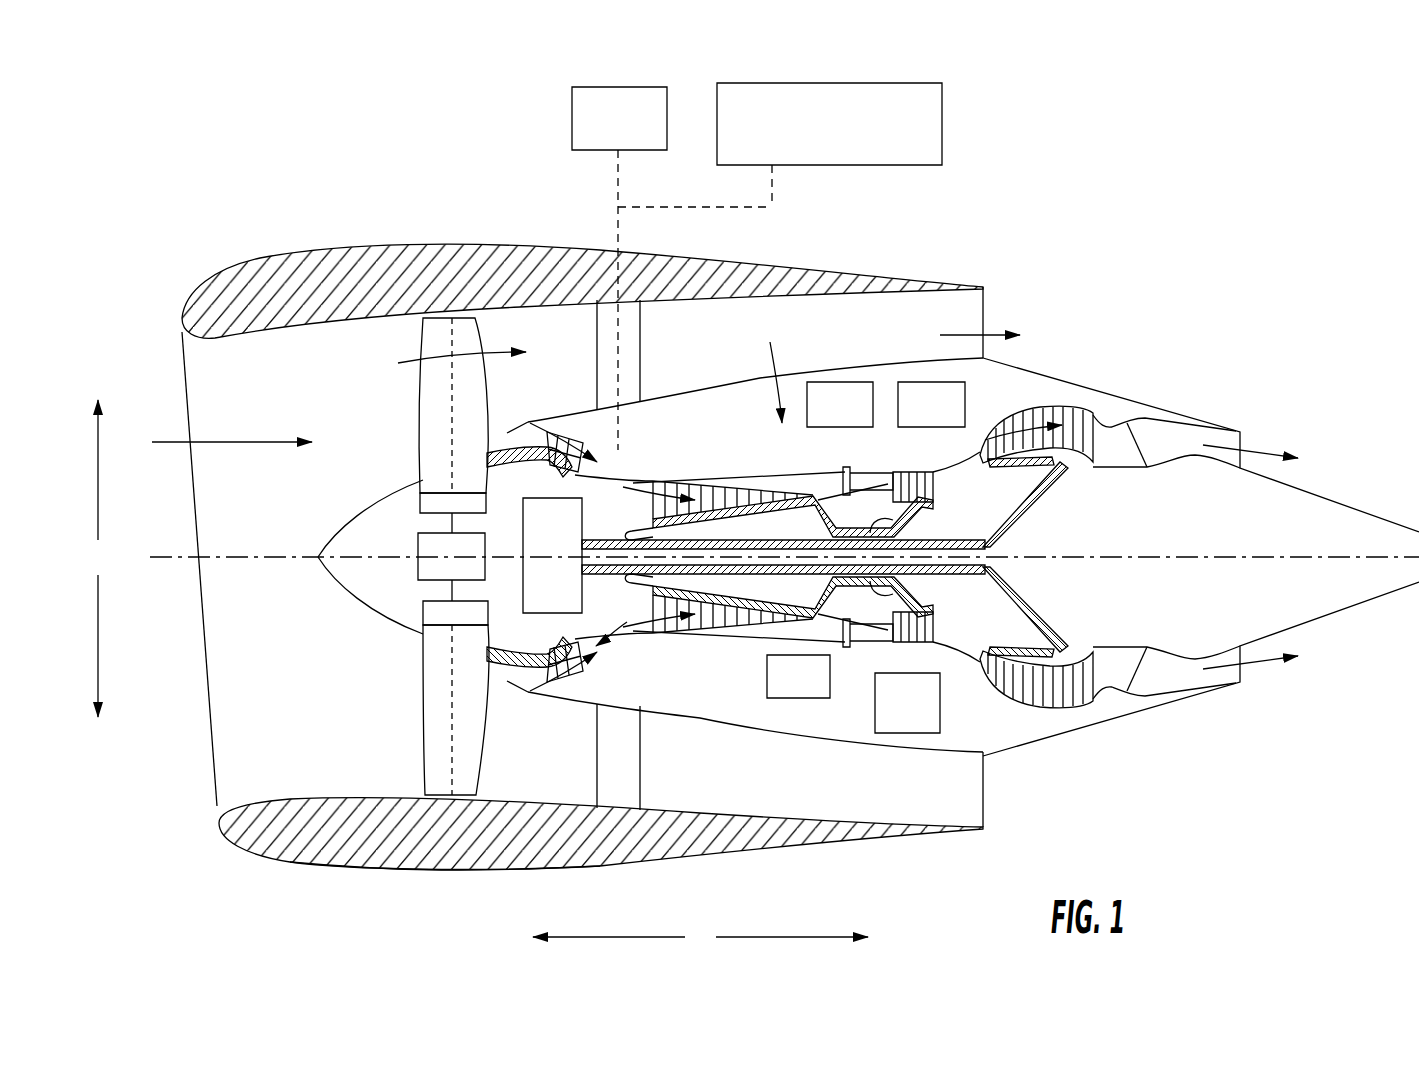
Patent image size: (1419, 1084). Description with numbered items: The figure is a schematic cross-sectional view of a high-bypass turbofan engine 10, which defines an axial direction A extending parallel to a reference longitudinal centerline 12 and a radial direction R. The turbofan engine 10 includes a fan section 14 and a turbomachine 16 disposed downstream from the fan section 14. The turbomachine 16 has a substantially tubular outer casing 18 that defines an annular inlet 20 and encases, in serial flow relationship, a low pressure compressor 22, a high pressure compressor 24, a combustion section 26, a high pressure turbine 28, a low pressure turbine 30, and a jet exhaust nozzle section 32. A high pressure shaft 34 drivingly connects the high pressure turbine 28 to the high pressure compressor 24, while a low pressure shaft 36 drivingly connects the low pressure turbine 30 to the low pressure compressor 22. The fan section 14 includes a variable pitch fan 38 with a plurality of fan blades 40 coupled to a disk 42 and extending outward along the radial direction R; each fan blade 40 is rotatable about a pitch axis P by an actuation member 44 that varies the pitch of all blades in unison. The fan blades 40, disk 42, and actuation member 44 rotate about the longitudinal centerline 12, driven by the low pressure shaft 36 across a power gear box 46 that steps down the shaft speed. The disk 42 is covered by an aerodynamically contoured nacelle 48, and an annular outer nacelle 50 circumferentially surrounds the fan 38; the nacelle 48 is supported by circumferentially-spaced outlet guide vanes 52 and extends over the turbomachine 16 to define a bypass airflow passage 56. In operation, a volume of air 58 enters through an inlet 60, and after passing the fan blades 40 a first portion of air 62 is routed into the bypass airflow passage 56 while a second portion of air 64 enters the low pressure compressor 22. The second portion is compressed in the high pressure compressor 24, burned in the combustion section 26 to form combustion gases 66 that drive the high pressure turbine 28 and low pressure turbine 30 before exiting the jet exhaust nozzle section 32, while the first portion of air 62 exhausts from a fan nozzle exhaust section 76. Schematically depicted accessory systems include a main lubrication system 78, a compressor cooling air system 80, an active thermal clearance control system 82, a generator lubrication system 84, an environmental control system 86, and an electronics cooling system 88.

The turbofan engine 10 is at (1148, 264).
The longitudinal centerline 12 is at (1173, 555).
The fan section 14 is at (370, 345).
The turbomachine 16 is at (778, 424).
The outer casing 18 is at (826, 742).
The annular inlet 20 is at (533, 678).
The low pressure compressor 22 is at (600, 612).
The high pressure compressor 24 is at (673, 612).
The combustion section 26 is at (868, 630).
The high pressure turbine 28 is at (944, 637).
The low pressure turbine 30 is at (1077, 703).
The jet exhaust nozzle section 32 is at (1147, 684).
The high pressure shaft 34 is at (908, 520).
The low pressure shaft 36 is at (992, 530).
The variable pitch fan 38 is at (378, 619).
The fan blades 40 is at (417, 728).
The disk 42 is at (423, 503).
The actuation member 44 is at (418, 545).
The power gear box 46 is at (563, 513).
The nacelle 48 is at (330, 568).
The outer nacelle 50 is at (475, 868).
The outlet guide vanes 52 is at (640, 345).
The bypass airflow passage 56 is at (715, 350).
The volume of air 58 is at (175, 442).
The inlet 60 is at (215, 798).
The first portion of air 62 is at (440, 373).
The second portion of air 64 is at (507, 432).
The combustion gases 66 is at (912, 474).
The fan nozzle exhaust section 76 is at (968, 318).
The main lubrication system 78 is at (910, 735).
The compressor cooling air system 80 is at (787, 700).
The active thermal clearance control system 82 is at (893, 381).
The generator lubrication system 84 is at (838, 381).
The environmental control system 86 is at (618, 86).
The electronics cooling system 88 is at (772, 83).
The pitch axis P is at (455, 335).
The radial direction R is at (98, 558).
The axial direction A is at (700, 937).